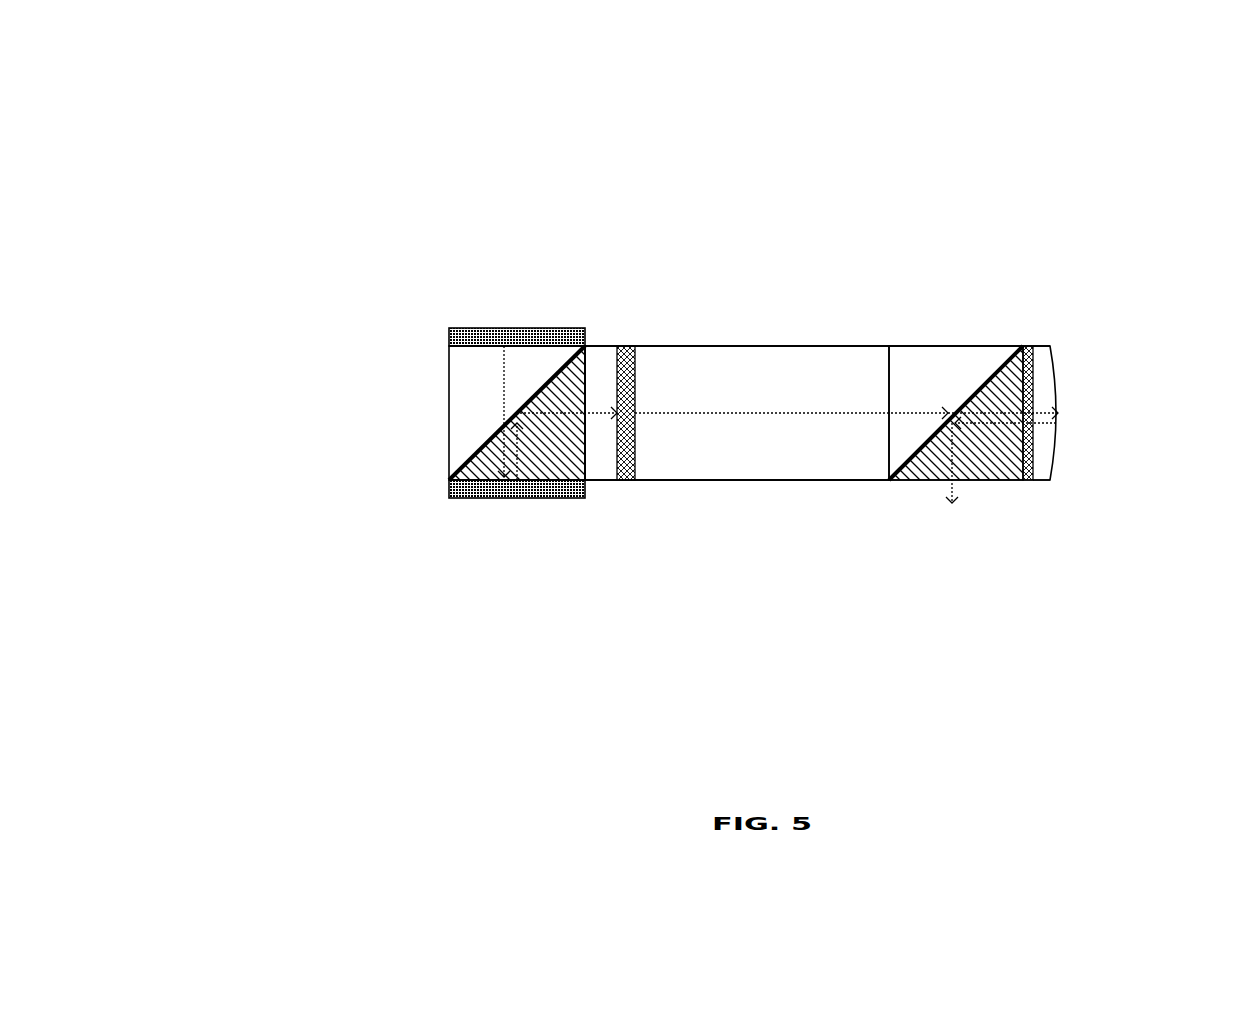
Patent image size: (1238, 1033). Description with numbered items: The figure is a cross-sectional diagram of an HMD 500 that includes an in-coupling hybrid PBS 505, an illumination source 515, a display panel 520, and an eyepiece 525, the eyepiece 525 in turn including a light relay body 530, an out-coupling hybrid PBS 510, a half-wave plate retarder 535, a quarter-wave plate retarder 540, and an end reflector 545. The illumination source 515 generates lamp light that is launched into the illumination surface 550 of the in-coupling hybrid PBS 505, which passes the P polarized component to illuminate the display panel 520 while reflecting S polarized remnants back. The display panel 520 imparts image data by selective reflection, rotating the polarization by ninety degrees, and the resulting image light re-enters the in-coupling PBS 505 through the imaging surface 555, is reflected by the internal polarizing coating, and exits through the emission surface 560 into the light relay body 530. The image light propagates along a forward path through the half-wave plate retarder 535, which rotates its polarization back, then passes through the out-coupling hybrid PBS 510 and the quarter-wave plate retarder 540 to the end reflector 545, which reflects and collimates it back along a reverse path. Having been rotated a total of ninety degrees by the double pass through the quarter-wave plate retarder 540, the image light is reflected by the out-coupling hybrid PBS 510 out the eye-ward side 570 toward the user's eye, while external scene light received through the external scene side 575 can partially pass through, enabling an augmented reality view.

The head mounted display (HMD) 500 is at (358, 118).
The in-coupling hybrid PBS 505 is at (430, 387).
The out-coupling hybrid PBS 510 is at (1023, 513).
The illumination source 515 is at (467, 327).
The display panel 520 is at (450, 487).
The eyepiece 525 is at (1060, 262).
The light relay body 530 is at (888, 513).
The half-wave plate retarder 535 is at (626, 345).
The quarter-wave plate retarder 540 is at (1027, 345).
The end reflector 545 is at (1055, 445).
The illumination surface 550 is at (532, 338).
The imaging surface 555 is at (490, 482).
The emission surface 560 is at (578, 448).
The eye-ward side 570 is at (804, 510).
The external scene side 575 is at (888, 322).